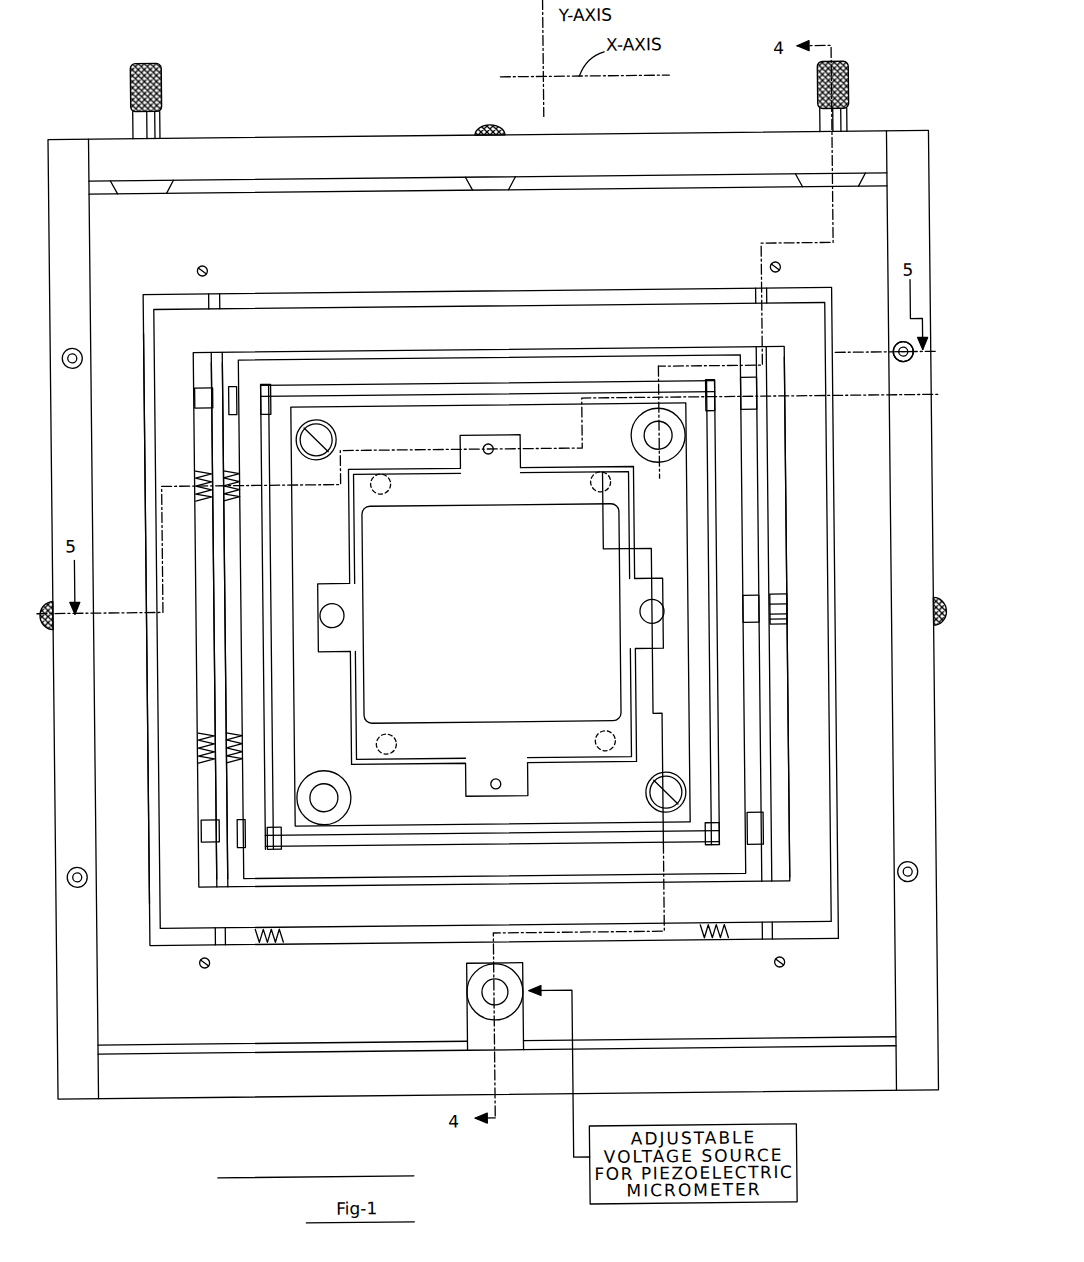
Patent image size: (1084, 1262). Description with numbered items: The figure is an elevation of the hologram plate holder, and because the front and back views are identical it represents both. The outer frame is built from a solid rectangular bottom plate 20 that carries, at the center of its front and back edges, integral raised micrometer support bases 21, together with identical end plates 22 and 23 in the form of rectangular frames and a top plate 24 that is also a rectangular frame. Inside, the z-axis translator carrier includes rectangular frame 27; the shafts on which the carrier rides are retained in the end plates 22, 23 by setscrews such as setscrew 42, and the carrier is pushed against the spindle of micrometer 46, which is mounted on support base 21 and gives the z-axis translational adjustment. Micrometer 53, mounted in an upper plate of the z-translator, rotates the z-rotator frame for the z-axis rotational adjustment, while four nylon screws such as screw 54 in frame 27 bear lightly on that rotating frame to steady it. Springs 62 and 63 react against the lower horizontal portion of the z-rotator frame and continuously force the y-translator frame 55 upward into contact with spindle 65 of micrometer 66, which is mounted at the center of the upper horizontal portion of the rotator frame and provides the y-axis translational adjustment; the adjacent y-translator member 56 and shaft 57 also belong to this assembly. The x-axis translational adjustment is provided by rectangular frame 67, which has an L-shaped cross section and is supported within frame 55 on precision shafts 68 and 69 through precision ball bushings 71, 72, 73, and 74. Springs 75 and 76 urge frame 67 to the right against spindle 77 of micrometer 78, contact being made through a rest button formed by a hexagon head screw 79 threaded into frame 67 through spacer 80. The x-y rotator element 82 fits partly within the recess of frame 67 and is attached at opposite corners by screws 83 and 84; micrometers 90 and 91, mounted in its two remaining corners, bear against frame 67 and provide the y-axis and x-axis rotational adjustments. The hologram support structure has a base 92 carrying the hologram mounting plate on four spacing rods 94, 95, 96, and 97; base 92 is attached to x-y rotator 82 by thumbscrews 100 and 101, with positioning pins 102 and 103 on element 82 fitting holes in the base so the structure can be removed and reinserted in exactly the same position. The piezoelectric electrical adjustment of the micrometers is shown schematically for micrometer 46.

The bottom plate 20 is at (215, 1085).
The micrometer support base 21 is at (463, 1030).
The end plate 22 is at (76, 1090).
The end plate 23 is at (918, 626).
The top plate 24 is at (295, 134).
The rectangular frame 27 is at (350, 1030).
The setscrew 42 is at (905, 364).
The micrometer 46 is at (463, 990).
The micrometer 53 is at (822, 95).
The nylon screw 54 is at (204, 966).
The y-translator frame 55 is at (165, 663).
The left guide plate 56 is at (222, 432).
The shaft 57 is at (770, 468).
The spring 62 is at (273, 941).
The spring 63 is at (718, 941).
The spindle 65 is at (500, 303).
The micrometer 66 is at (483, 129).
The rectangular frame 67 is at (250, 563).
The precision shaft 68 is at (212, 395).
The precision shaft 69 is at (208, 838).
The precision ball bushing 71 is at (268, 414).
The precision ball bushing 72 is at (712, 415).
The precision ball bushing 73 is at (278, 828).
The precision ball bushing 74 is at (713, 822).
The spring 75 is at (205, 498).
The spring 76 is at (210, 765).
The spindle 77 is at (782, 600).
The micrometer 78 is at (935, 602).
The hexagon head screw 79 is at (782, 620).
The spacer 80 is at (750, 612).
The x-y rotator element 82 is at (300, 716).
The screw 83 is at (646, 794).
The screw 84 is at (334, 434).
The micrometer 90 is at (336, 799).
The micrometer 91 is at (655, 437).
The base 92 is at (434, 490).
The spacing rod 94 is at (384, 495).
The spacing rod 95 is at (600, 495).
The spacing rod 96 is at (392, 733).
The spacing rod 97 is at (604, 732).
The thumbscrew 100 is at (332, 626).
The thumbscrew 101 is at (656, 625).
The positioning pin 102 is at (490, 454).
The positioning pin 103 is at (494, 779).